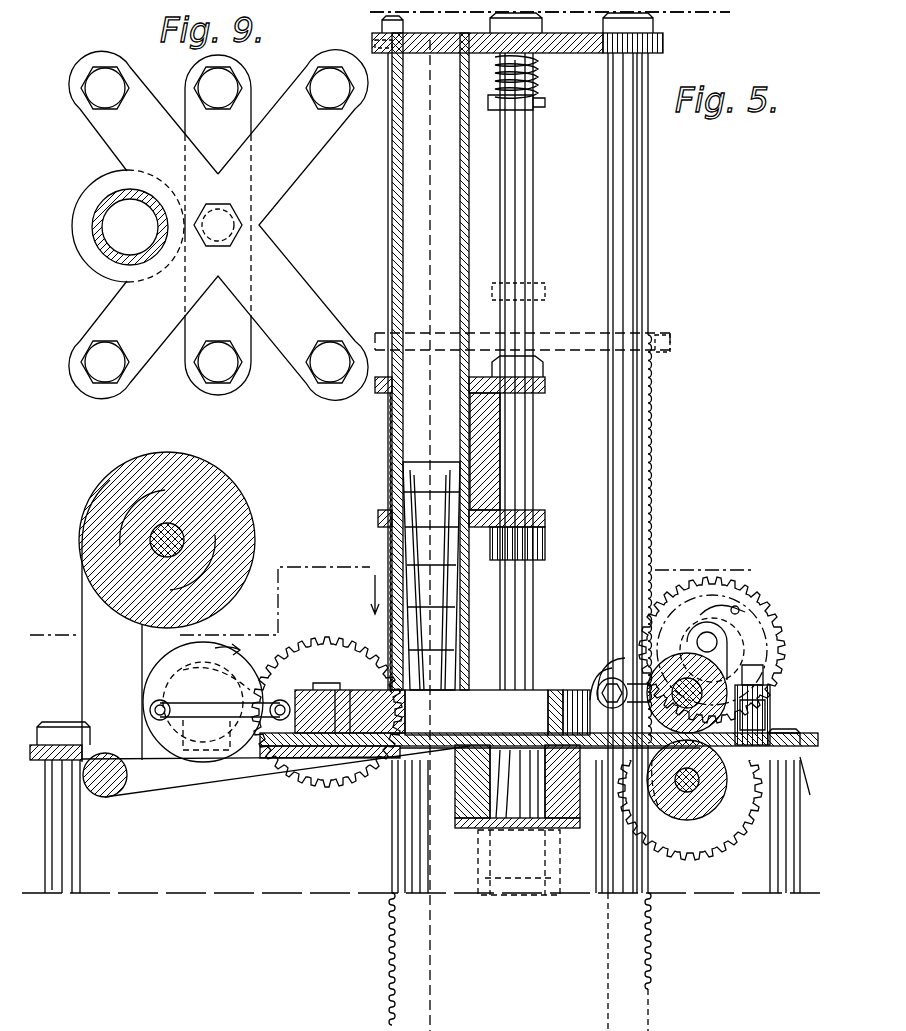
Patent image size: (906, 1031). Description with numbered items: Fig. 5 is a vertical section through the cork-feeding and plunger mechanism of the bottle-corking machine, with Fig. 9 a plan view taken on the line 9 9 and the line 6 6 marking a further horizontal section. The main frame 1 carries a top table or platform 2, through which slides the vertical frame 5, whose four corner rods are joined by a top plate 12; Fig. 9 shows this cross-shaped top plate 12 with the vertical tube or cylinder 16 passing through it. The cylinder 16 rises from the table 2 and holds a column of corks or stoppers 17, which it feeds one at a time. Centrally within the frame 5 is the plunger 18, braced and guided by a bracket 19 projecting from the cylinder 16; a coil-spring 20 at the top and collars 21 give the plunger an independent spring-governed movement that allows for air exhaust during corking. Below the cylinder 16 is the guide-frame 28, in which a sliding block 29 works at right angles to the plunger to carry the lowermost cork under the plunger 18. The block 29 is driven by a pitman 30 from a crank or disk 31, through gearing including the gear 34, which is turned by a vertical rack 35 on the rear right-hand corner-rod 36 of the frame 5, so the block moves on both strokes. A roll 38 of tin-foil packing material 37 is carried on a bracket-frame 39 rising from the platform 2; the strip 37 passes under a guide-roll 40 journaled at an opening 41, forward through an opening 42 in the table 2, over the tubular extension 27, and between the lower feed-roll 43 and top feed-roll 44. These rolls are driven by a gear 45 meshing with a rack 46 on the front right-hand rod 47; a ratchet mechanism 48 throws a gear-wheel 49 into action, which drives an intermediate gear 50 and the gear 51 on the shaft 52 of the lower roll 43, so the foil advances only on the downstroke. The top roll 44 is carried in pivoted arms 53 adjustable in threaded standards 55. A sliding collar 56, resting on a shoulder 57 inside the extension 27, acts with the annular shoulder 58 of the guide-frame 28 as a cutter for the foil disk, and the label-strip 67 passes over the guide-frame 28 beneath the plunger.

In FIG. 5, the main frame 1 is at (421, 807).
In FIG. 5, the top table or platform 2 is at (300, 778).
In FIG. 5, the vertically-sliding frame 5 is at (648, 278).
In FIG. 5, the section line 6 6 is at (404, 484).
In FIG. 5, the section line 9 9 is at (525, 22).
In FIG. 9, the top plate 12 is at (218, 225).
In FIG. 5, the top plate 12 is at (538, 50).
In FIG. 9, the vertical tube or cylinder 16 is at (128, 226).
In FIG. 5, the vertical tube or cylinder 16 is at (430, 532).
In FIG. 5, the corks or stoppers 17 is at (415, 576).
In FIG. 5, the plunger 18 is at (520, 450).
In FIG. 5, the bracket 19 is at (490, 487).
In FIG. 5, the coil-spring 20 is at (538, 78).
In FIG. 5, the top flanges or collars 21 is at (548, 102).
In FIG. 5, the tubular extension 27 is at (591, 826).
In FIG. 5, the guide-frame 28 is at (484, 712).
In FIG. 5, the sliding block 29 is at (342, 655).
In FIG. 5, the pitman 30 is at (210, 720).
In FIG. 5, the crank or disk 31 is at (203, 702).
In FIG. 5, the gear 34 is at (327, 712).
In FIG. 5, the vertical rack 35 is at (388, 445).
In FIG. 5, the rear right-hand corner-rod 36 is at (388, 300).
In FIG. 5, the tin-foil or analogous material 37 is at (193, 783).
In FIG. 5, the roll 38 is at (232, 565).
In FIG. 5, the bracket-frame 39 is at (112, 621).
In FIG. 5, the guide-roll 40 is at (108, 790).
In FIG. 5, the opening 41 is at (134, 750).
In FIG. 5, the opening 42 is at (330, 780).
In FIG. 5, the lower feed-roll 43 is at (720, 800).
In FIG. 5, the top feed-roll 44 is at (728, 670).
In FIG. 5, the gear 45 is at (770, 628).
In FIG. 5, the vertical rack 46 is at (652, 538).
In FIG. 5, the front right-hand rod 47 is at (623, 312).
In FIG. 5, the ratchet mechanism 48 is at (748, 612).
In FIG. 5, the gear-wheel 49 is at (727, 648).
In FIG. 5, the intermediate gear 50 is at (772, 695).
In FIG. 5, the gear 51 is at (690, 788).
In FIG. 5, the shaft 52 is at (665, 801).
In FIG. 5, the arms 53 is at (612, 678).
In FIG. 5, the vertical threaded standards 55 is at (765, 735).
In FIG. 5, the vertically-sliding collar 56 is at (500, 862).
In FIG. 5, the shoulder 57 is at (560, 820).
In FIG. 5, the annular shoulder 58 is at (517, 781).
In FIG. 5, the label-strip 67 is at (572, 690).